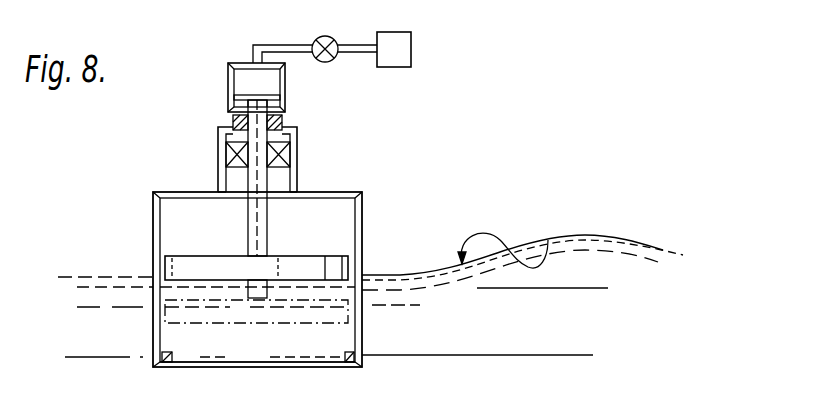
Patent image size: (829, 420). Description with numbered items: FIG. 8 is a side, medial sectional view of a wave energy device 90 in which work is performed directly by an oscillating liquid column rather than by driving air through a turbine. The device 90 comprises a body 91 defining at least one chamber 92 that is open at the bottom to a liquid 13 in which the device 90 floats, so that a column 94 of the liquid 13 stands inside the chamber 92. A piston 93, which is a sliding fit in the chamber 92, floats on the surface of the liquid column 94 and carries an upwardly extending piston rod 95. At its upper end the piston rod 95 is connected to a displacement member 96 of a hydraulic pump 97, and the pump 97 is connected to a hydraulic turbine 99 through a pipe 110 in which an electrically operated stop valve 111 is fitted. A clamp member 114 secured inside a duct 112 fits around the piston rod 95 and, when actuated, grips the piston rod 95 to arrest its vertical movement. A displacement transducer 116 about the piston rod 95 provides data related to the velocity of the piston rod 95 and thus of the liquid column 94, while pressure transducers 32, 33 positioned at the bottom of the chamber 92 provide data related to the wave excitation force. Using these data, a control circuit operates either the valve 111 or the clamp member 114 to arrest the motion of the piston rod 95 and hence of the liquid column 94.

The liquid 13 is at (117, 300).
The pressure transducer 32 is at (351, 365).
The pressure transducer 33 is at (167, 364).
The device 90 is at (189, 152).
The body 91 is at (363, 201).
The chamber 92 is at (330, 232).
The piston 93 is at (362, 257).
The liquid column 94 is at (237, 350).
The piston rod 95 is at (247, 215).
The displacement member 96 is at (268, 96).
The hydraulic pump 97 is at (227, 78).
The hydraulic turbine 99 is at (411, 32).
The pipe 110 is at (274, 44).
The stop valve 111 is at (332, 36).
The duct 112 is at (298, 176).
The clamp member 114 is at (218, 150).
The displacement transducer 116 is at (285, 123).